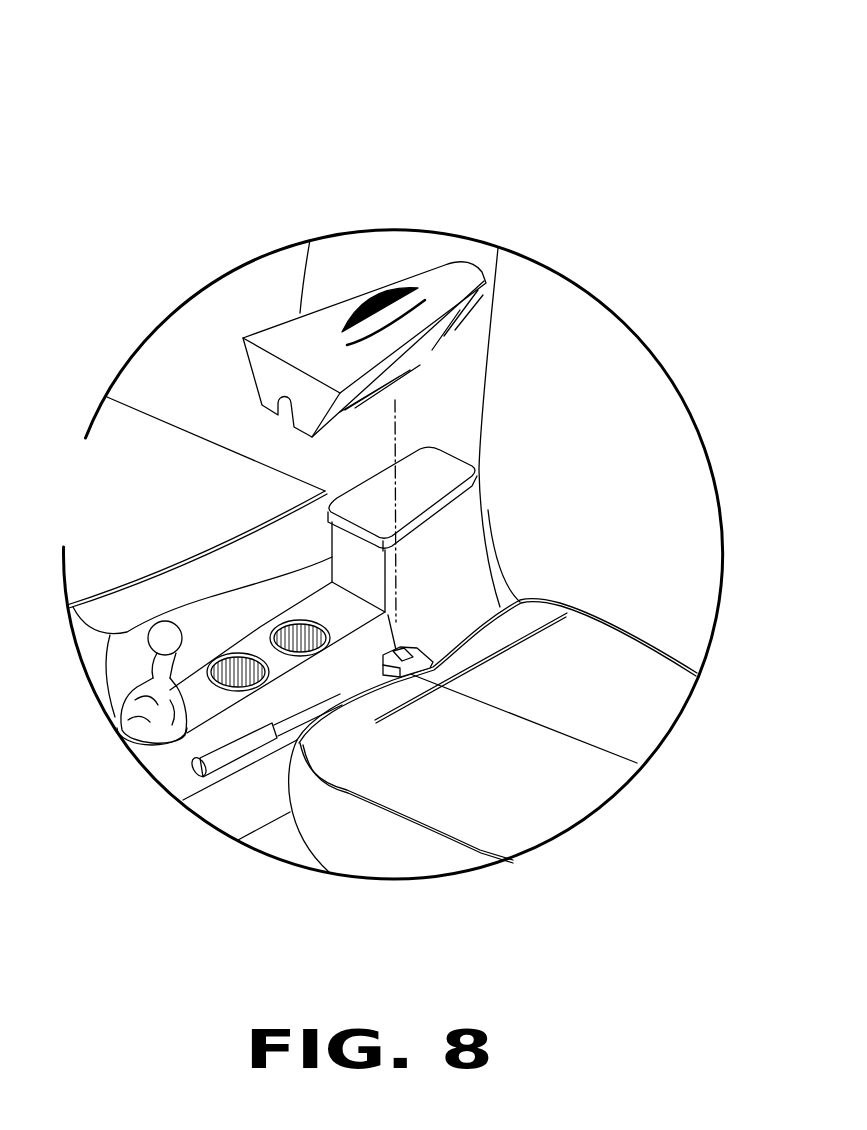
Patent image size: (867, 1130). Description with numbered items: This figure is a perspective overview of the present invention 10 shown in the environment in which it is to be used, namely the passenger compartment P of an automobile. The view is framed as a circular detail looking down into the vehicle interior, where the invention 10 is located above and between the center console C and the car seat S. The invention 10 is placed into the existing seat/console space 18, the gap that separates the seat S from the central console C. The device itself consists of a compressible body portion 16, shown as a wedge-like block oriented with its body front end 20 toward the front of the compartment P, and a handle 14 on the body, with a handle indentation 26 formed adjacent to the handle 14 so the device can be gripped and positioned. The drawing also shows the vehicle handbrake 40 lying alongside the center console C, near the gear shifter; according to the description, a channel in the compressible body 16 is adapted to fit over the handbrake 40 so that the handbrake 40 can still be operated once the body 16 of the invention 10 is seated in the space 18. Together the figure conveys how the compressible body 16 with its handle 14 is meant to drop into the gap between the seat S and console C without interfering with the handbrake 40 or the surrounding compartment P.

The present invention 10 is at (118, 102).
The handle 14 is at (390, 312).
The compressible body portion 16 is at (271, 305).
The existing seat/console space 18 is at (455, 628).
The body front end 20 is at (587, 420).
The handle indentation 26 is at (390, 323).
The vehicle handbrake 40 is at (197, 762).
The vehicle compartment P is at (299, 497).
The center console C is at (352, 623).
The car seat S is at (643, 735).